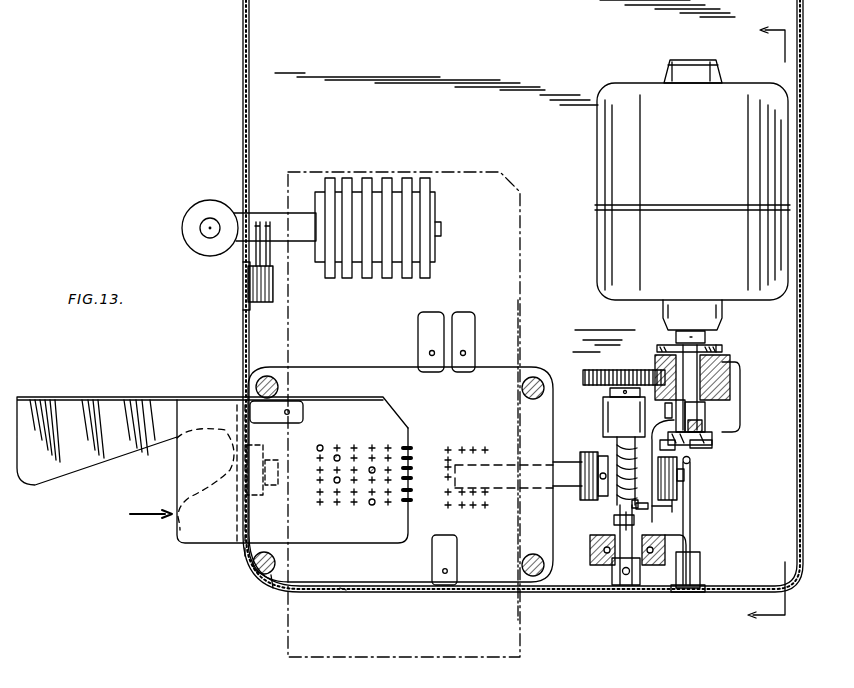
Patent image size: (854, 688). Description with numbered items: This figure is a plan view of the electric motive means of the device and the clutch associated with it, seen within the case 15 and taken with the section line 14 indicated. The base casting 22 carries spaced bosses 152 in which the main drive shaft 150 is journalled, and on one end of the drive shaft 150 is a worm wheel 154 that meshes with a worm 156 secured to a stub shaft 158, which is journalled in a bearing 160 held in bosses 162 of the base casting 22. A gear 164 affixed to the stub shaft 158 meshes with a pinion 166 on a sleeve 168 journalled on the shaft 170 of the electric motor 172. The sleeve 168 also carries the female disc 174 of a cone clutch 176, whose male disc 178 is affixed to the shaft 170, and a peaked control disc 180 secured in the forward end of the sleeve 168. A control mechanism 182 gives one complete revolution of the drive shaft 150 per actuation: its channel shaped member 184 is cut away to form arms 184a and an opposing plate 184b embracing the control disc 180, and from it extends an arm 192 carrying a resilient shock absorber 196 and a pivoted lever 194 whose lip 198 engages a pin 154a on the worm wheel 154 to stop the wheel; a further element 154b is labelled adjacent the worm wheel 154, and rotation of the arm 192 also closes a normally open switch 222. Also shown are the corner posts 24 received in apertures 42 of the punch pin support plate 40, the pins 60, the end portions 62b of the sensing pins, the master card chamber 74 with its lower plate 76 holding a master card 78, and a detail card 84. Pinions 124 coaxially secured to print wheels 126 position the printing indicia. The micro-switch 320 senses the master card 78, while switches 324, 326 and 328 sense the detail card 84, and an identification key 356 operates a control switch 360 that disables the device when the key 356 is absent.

The chassis frame / section line 14 is at (375, 570).
The case 15 is at (600, 596).
The base casting 22 is at (655, 597).
The corner post 24 is at (276, 380).
The punch pin support plate 40 is at (250, 551).
The aperture 42 is at (272, 588).
The pin 60 is at (430, 458).
The reduced end portion 62b is at (370, 468).
The master card chamber 74 is at (370, 552).
The lower plate 76 is at (345, 590).
The master card 78 is at (178, 478).
The detail card 84 is at (525, 625).
The pinion 124 is at (405, 292).
The print wheel 126 is at (330, 280).
The main drive shaft 150 is at (562, 493).
The boss 152 is at (583, 458).
The worm wheel 154 is at (620, 468).
The pin 154a is at (663, 503).
The screw collar 154b is at (618, 514).
The worm 156 is at (655, 462).
The stub shaft 158 is at (640, 525).
The bearing 160 is at (612, 565).
The boss 162 is at (604, 408).
The gear 164 is at (592, 372).
The pinion 166 is at (728, 382).
The sleeve 168 is at (712, 400).
The shaft 170 is at (708, 345).
The electric motor 172 is at (622, 98).
The female disc 174 is at (725, 362).
The cone clutch 176 is at (660, 354).
The male disc 178 is at (718, 344).
The control disc 180 is at (712, 438).
The control mechanism 182 is at (702, 508).
The channel shaped member 184 is at (724, 420).
The arm 184a is at (675, 448).
The opposing plate 184b is at (712, 444).
The arm 192 is at (678, 484).
The lever 194 is at (670, 520).
The resilient shock absorber 196 is at (684, 476).
The lip 198 is at (614, 519).
The switch 222 is at (700, 566).
The micro-switch 320 is at (292, 401).
The switch 324 is at (457, 551).
The switch 326 is at (466, 336).
The switch 328 is at (418, 352).
The key 356 is at (204, 212).
The control switch 360 is at (262, 302).